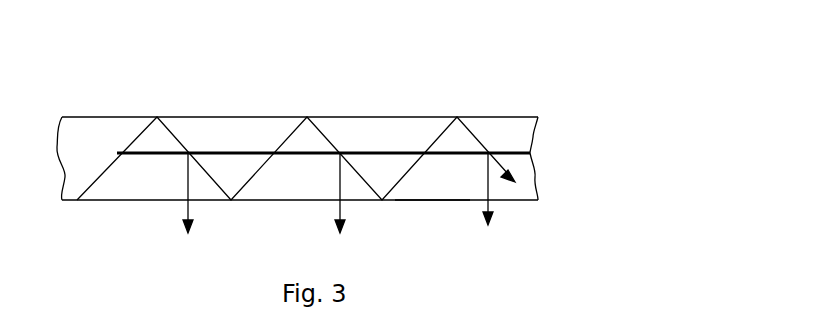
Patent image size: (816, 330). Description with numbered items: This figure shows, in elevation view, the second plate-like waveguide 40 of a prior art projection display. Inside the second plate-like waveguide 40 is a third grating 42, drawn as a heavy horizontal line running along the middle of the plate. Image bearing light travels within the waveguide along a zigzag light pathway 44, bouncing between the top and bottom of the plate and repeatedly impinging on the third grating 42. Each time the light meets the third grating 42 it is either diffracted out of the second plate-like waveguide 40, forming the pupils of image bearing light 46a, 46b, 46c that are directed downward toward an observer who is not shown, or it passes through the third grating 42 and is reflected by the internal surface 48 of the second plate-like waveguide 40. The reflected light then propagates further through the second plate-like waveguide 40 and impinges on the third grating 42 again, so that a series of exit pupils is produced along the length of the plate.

The second plate-like waveguide 40 is at (585, 152).
The third grating 42 is at (230, 153).
The light pathway 44 is at (253, 177).
The pupil of image bearing light 46a is at (186, 224).
The pupil of image bearing light 46b is at (338, 224).
The pupil of image bearing light 46c is at (486, 222).
The internal surface 48 is at (442, 200).